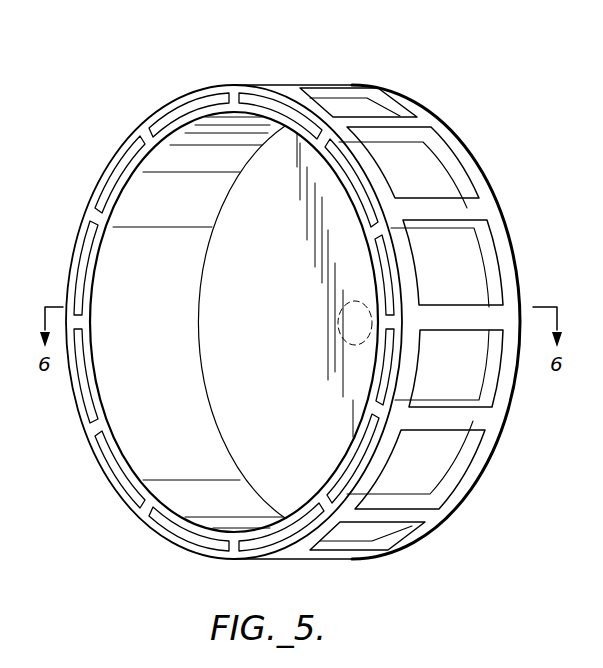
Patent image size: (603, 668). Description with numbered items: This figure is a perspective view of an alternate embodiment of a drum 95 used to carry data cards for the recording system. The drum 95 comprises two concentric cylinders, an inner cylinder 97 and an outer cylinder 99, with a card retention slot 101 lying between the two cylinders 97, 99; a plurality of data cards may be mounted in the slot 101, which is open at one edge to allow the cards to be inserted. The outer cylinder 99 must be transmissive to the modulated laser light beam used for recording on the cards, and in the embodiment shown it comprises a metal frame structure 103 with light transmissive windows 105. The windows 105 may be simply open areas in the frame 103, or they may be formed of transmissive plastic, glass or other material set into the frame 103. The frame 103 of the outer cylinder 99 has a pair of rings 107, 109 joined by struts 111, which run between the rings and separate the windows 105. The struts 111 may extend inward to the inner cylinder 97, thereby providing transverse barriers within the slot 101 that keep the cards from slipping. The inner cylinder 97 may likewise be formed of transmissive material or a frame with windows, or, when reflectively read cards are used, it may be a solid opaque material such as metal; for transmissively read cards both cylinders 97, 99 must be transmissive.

The drum 95 is at (211, 54).
The inner cylinder 97 is at (148, 148).
The outer cylinder 99 is at (162, 113).
The card retention slot 101 is at (216, 101).
The metal frame structure 103 is at (512, 442).
The light transmissive windows 105 is at (458, 234).
The ring 107 is at (473, 172).
The ring 109 is at (377, 182).
The struts 111 is at (335, 87).